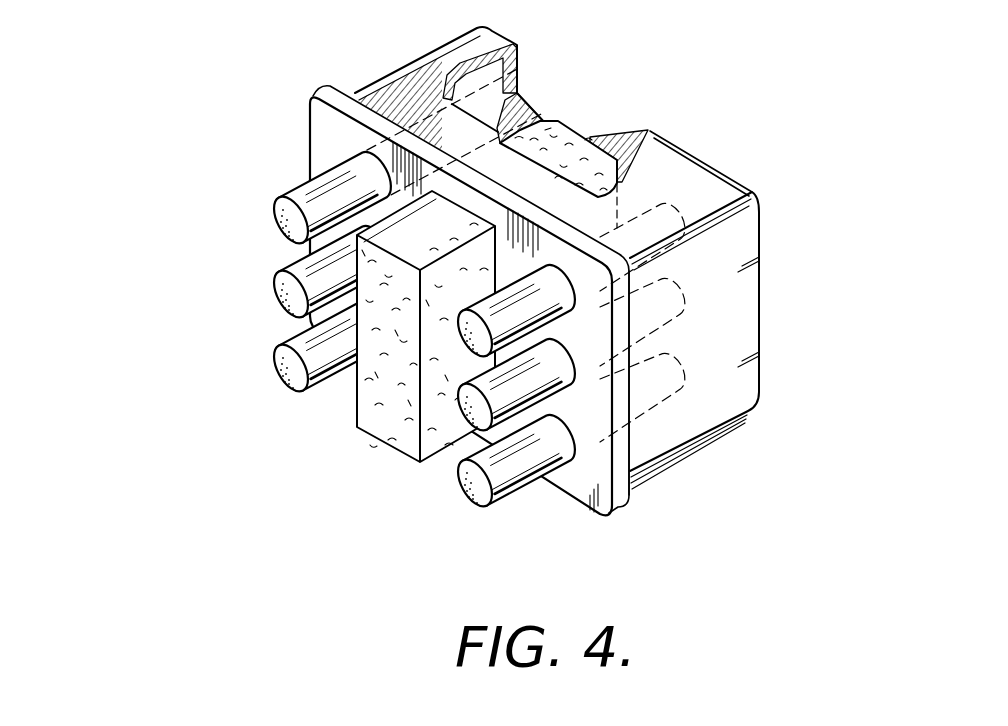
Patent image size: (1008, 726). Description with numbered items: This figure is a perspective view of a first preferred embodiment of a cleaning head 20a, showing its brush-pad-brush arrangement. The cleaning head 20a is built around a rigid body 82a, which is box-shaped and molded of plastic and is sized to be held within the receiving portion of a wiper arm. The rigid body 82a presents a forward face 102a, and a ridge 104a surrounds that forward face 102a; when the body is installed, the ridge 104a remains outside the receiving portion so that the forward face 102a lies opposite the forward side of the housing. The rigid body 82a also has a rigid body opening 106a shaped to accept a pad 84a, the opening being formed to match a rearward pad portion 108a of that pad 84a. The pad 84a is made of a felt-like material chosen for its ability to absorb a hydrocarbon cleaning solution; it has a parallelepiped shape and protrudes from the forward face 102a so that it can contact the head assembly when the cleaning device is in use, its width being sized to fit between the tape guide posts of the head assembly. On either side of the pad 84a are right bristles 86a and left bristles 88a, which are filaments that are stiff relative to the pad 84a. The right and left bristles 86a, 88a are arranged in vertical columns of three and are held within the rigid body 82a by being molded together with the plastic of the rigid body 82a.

The cleaning head 20a is at (175, 494).
The rigid body 82a is at (757, 491).
The pad 84a is at (383, 443).
The right bristles 86a is at (461, 500).
The left bristles 88a is at (284, 381).
The forward face 102a is at (582, 478).
The ridge 104a is at (622, 502).
The rigid body opening 106a is at (452, 198).
The rearward pad portion 108a is at (560, 132).